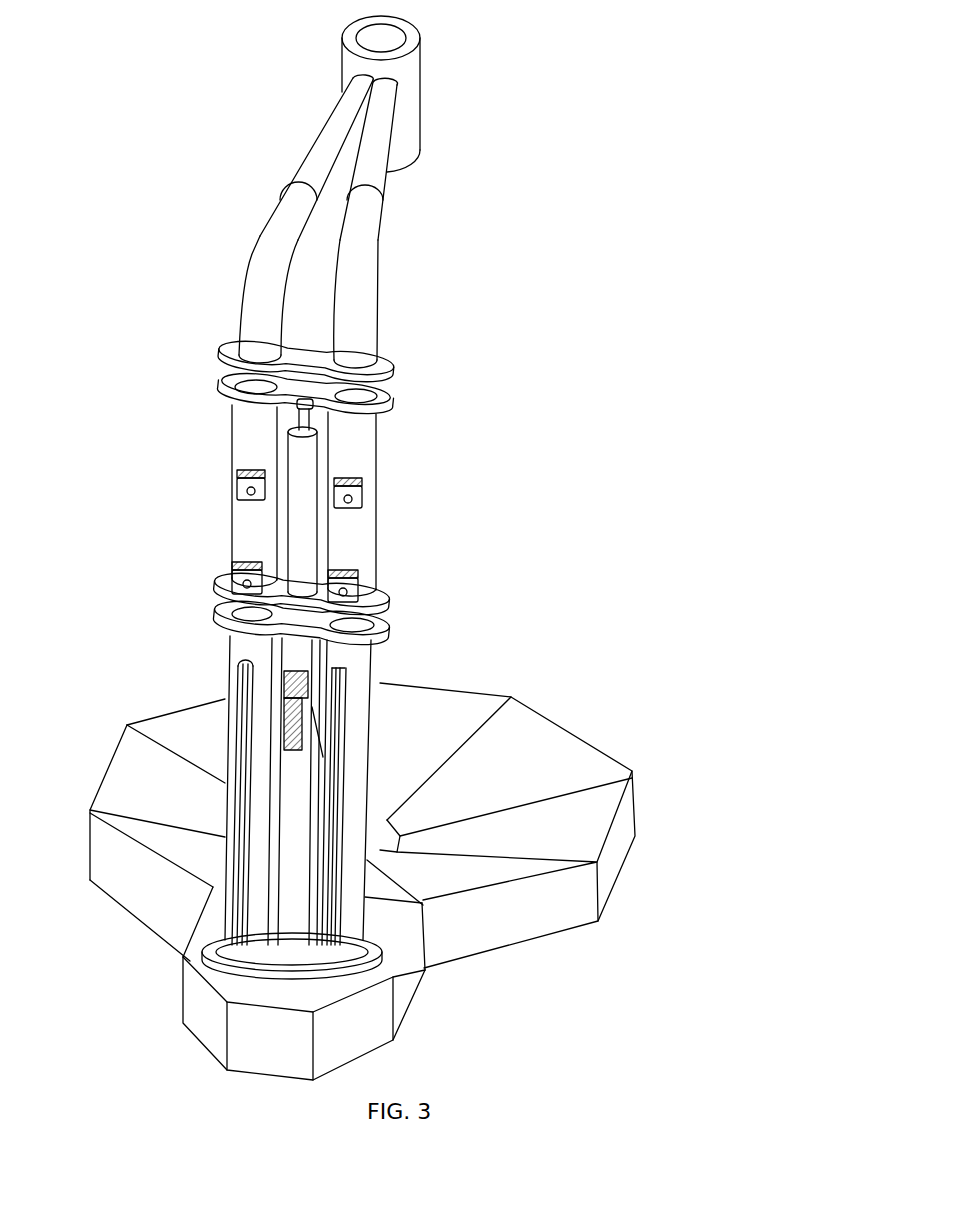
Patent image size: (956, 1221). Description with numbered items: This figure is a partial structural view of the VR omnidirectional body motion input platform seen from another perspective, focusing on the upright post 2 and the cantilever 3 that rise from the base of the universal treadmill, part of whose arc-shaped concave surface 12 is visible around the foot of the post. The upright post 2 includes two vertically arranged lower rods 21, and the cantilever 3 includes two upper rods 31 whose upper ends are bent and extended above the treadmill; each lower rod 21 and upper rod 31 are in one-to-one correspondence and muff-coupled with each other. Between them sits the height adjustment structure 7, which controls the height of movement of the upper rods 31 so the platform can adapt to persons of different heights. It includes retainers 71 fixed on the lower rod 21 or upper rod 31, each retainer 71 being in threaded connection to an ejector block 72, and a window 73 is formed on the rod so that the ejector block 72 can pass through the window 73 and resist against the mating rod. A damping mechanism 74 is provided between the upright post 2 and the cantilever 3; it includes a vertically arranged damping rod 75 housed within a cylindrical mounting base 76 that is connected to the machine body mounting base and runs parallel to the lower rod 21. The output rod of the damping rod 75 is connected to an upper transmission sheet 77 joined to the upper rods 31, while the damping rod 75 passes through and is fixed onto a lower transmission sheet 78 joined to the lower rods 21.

The cantilever 3 is at (312, 172).
The upper rod 31 is at (267, 256).
The height adjustment structure 7 is at (222, 447).
The upper transmission sheet 77 is at (328, 358).
The damping mechanism 74 is at (393, 456).
The damping rod 75 is at (307, 512).
The ejector block 72 is at (233, 558).
The window 73 is at (231, 560).
The retainer 71 is at (232, 563).
The lower transmission sheet 78 is at (393, 655).
The upright post 2 is at (224, 688).
The lower rod 21 is at (258, 644).
The cylindrical mounting base 76 is at (292, 786).
The arc-shaped concave surface 12 is at (523, 750).